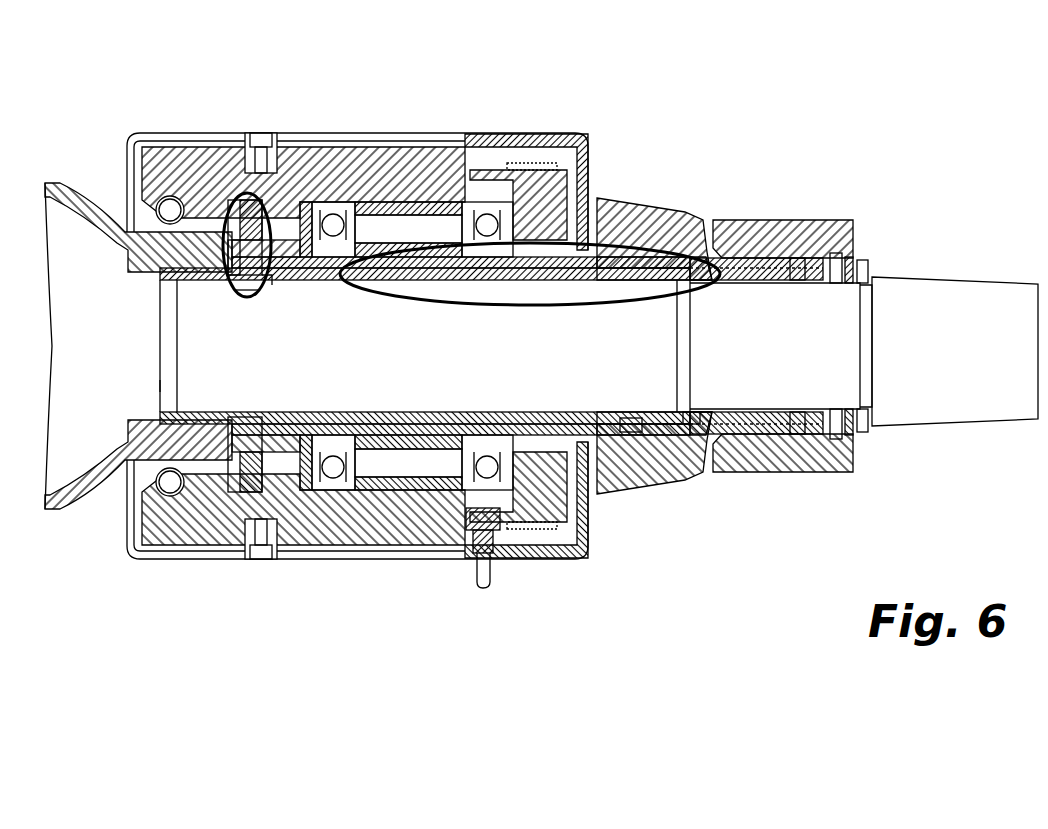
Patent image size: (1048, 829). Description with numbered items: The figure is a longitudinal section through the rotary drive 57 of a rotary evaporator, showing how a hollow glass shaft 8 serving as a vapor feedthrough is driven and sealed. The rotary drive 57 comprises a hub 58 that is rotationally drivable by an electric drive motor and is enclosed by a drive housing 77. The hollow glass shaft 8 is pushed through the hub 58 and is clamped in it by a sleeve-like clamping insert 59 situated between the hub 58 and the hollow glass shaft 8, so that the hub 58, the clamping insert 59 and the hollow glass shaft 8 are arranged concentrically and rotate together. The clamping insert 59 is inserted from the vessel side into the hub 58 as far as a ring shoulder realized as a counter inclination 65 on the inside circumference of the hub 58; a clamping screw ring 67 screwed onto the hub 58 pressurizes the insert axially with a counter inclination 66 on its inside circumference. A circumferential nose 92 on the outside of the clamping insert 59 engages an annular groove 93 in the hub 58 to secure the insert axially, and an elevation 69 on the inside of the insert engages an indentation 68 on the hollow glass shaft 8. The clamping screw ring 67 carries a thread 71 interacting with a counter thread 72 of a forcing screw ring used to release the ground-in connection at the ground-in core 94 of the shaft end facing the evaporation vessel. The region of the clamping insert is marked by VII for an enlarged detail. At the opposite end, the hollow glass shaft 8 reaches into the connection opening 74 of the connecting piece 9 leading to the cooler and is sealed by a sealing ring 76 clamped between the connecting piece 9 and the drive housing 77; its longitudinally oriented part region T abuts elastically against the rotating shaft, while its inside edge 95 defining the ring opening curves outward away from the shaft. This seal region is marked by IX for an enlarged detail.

The hollow glass shaft 8 is at (758, 276).
The connecting piece 9 is at (121, 231).
The rotary drive 57 is at (459, 92).
The hub 58 is at (434, 240).
The clamping insert 59 is at (654, 304).
The counter inclination 65 is at (381, 277).
The counter inclination 66 is at (673, 286).
The clamping screw ring 67 is at (682, 212).
The indentation 68 is at (688, 367).
The elevation 69 is at (692, 404).
The thread 71 is at (815, 260).
The counter thread 72 is at (798, 260).
The connection opening 74 is at (168, 385).
The sealing ring 76 is at (219, 270).
The drive housing 77 is at (282, 190).
The circumferential nose 92 is at (596, 276).
The annular groove 93 is at (631, 423).
The ground-in core 94 is at (962, 283).
The inside edge 95 is at (269, 294).
The part region T is at (243, 301).
The detail region IX is at (244, 198).
The detail region VII is at (719, 250).